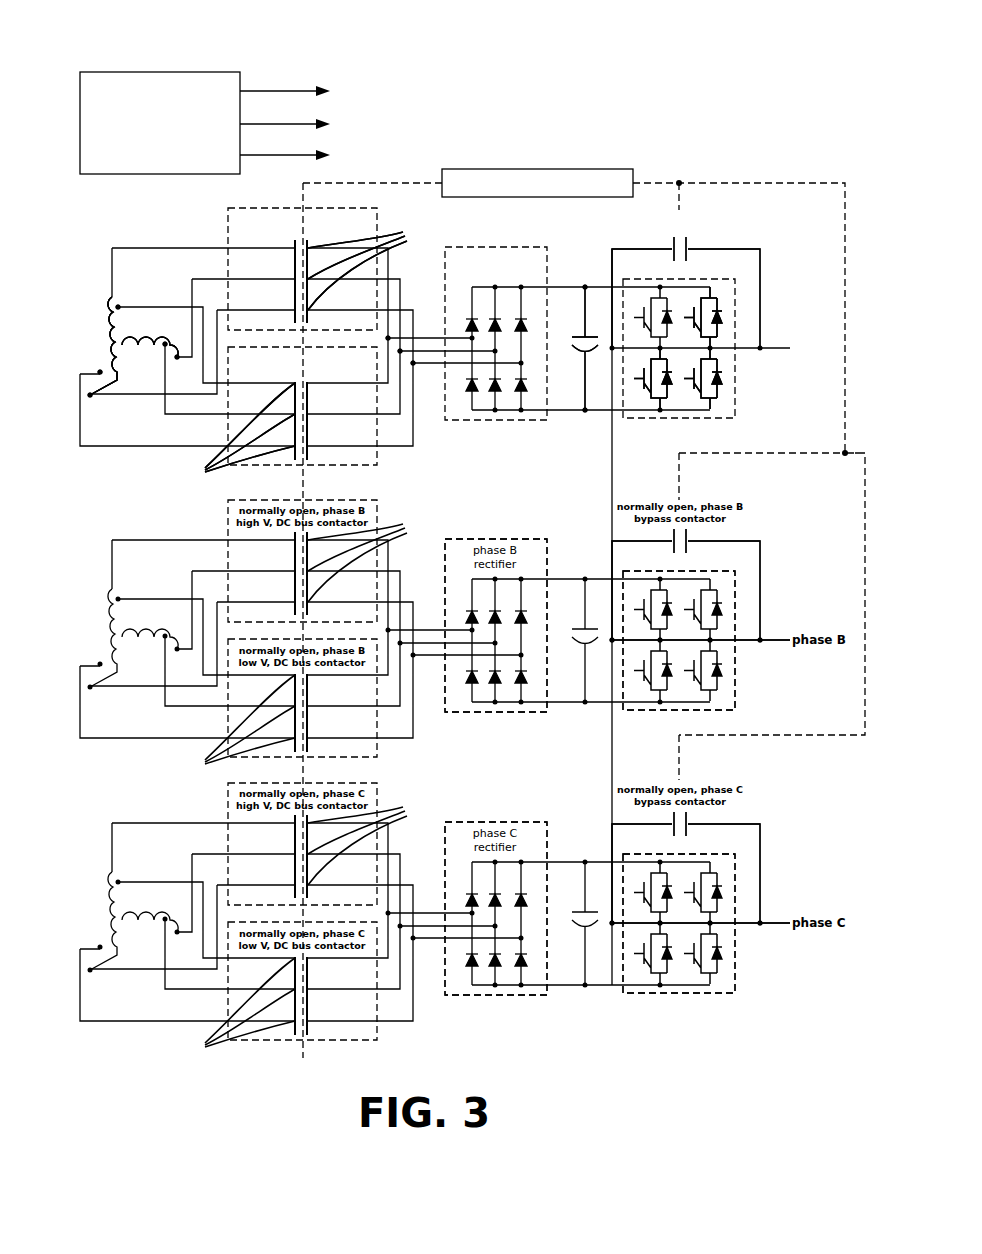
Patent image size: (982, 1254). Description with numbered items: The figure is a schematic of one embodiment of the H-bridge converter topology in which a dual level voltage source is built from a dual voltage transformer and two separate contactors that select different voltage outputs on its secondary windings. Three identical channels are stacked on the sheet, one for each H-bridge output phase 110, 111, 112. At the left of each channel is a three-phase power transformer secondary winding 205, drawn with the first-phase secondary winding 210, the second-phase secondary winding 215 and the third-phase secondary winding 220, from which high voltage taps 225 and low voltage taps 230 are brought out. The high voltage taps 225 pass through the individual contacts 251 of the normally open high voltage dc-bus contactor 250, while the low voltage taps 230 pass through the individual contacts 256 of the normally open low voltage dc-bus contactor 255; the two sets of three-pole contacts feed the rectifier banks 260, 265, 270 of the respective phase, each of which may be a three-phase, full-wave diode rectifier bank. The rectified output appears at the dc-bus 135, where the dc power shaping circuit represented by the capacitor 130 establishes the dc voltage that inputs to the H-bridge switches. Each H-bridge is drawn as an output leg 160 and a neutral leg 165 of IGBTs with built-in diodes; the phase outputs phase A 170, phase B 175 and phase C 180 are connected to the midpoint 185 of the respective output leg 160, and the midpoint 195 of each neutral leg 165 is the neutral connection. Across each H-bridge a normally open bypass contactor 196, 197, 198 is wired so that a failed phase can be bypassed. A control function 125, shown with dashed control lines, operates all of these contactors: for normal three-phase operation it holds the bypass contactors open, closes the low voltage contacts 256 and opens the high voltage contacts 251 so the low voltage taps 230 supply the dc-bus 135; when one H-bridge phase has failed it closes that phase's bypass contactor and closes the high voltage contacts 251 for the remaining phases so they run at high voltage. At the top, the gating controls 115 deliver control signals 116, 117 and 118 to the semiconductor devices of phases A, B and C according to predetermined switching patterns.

The H-bridge output phase A 110 is at (736, 281).
The H-bridge output phase B 111 is at (720, 620).
The H-bridge output phase C 112 is at (720, 903).
The gating controls 115 is at (161, 72).
The control signal 116 is at (274, 90).
The control signal 117 is at (284, 123).
The control signal 118 is at (282, 157).
The control function 125 is at (598, 169).
The capacitor 130 is at (578, 338).
The dc-bus 135 is at (588, 287).
The output leg 160 is at (728, 334).
The neutral leg 165 is at (640, 361).
The phase A 170 is at (772, 348).
The phase B 175 is at (719, 618).
The phase C 180 is at (719, 901).
The midpoint 185 is at (712, 348).
The midpoint 195 is at (659, 347).
The phase A bypass contactor 196 is at (688, 240).
The phase B bypass contactor 197 is at (706, 573).
The phase C bypass contactor 198 is at (706, 856).
The three-phase power transformer secondary winding 205 is at (95, 344).
The phase 1 transformer secondary winding 210 is at (125, 330).
The phase 2 transformer secondary winding 215 is at (143, 345).
The phase 3 transformer secondary winding 220 is at (117, 408).
The high voltage taps 225 is at (110, 299).
The low voltage taps 230 is at (118, 306).
The high voltage dc-bus contactor 250 is at (225, 236).
The individual contacts of high voltage contactor 251 is at (367, 260).
The low voltage dc-bus contactor 255 is at (378, 455).
The individual contacts of low voltage contactor 256 is at (229, 431).
The phase A rectifier bank 260 is at (530, 246).
The phase B rectifier bank 265 is at (497, 601).
The phase C rectifier bank 270 is at (497, 884).